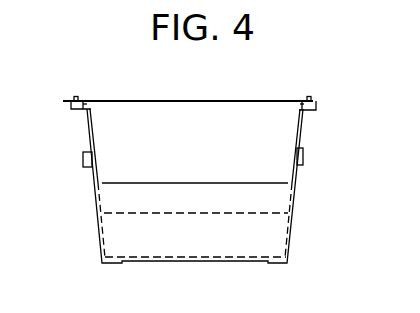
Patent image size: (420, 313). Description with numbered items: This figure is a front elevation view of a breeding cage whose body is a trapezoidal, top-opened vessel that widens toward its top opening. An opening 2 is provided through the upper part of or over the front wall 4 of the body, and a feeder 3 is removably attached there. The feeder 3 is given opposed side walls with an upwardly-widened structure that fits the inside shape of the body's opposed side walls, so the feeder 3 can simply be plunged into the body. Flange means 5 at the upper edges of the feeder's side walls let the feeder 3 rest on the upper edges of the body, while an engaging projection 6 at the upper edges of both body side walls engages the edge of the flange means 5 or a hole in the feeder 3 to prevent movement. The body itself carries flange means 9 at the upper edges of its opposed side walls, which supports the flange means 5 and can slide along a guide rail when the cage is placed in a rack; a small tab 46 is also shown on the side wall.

The opening 2 is at (98, 173).
The feeder 3 is at (200, 122).
The front wall 4 is at (226, 233).
The flange means 5 is at (65, 101).
The engaging projection 6 is at (310, 97).
The flange means 9 is at (80, 110).
The tab 46 is at (302, 164).